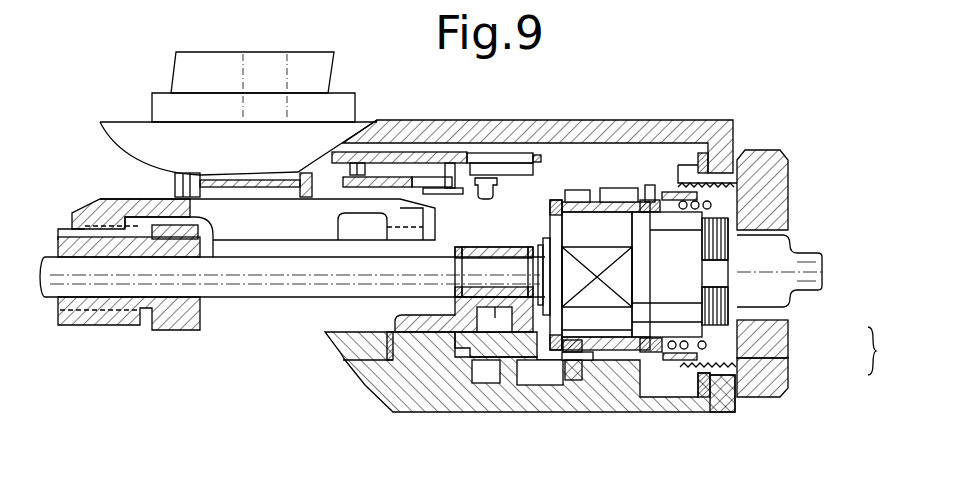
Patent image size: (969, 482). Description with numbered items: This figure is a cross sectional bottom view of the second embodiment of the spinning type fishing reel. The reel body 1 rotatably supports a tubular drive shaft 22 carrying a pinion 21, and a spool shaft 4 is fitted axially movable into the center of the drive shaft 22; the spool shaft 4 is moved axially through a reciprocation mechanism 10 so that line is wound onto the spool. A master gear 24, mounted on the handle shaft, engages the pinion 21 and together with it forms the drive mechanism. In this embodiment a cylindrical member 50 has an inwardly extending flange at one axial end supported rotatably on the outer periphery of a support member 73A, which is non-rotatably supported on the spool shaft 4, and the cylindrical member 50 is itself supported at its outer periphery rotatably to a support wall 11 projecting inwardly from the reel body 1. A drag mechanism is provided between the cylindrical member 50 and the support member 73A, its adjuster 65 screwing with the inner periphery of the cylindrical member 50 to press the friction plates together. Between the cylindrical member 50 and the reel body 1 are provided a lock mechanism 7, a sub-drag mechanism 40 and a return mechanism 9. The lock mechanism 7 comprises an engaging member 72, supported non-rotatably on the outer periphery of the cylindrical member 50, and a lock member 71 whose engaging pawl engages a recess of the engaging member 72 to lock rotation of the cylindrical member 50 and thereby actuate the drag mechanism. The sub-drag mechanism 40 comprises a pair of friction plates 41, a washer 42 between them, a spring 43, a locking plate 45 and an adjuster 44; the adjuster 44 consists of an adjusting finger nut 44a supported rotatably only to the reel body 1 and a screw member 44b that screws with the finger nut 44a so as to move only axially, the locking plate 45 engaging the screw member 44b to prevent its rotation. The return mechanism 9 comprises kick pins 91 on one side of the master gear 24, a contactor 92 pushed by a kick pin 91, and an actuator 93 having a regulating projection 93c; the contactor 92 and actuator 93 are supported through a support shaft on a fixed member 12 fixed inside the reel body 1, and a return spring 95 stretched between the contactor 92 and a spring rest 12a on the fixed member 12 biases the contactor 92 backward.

The reel body 1 is at (578, 120).
The spool shaft 4 is at (388, 285).
The lock mechanism 7 is at (555, 371).
The return mechanism 9 is at (458, 163).
The reciprocation mechanism 10 is at (436, 333).
The support wall 11 is at (615, 197).
The fixed member 12 is at (372, 152).
The spring rest 12a is at (487, 198).
The pinion 21 is at (58, 228).
The drive shaft 22 is at (60, 250).
The master gear 24 is at (120, 199).
The sub-drag mechanism 40 is at (740, 383).
The friction plates 41 is at (672, 360).
The washer 42 is at (650, 355).
The spring 43 is at (708, 392).
The adjuster 44 is at (823, 262).
The adjusting finger nut 44a is at (777, 335).
The screw member 44b is at (745, 357).
The locking plate 45 is at (680, 362).
The cylindrical member 50 is at (618, 352).
The adjuster 65 is at (822, 282).
The lock member 71 is at (575, 355).
The engaging member 72 is at (580, 382).
The support member 73A is at (517, 335).
The kick pins 91 is at (330, 176).
The contactor 92 is at (352, 190).
The actuator 93 is at (400, 163).
The regulating projection 93c is at (448, 194).
The return spring 95 is at (482, 163).